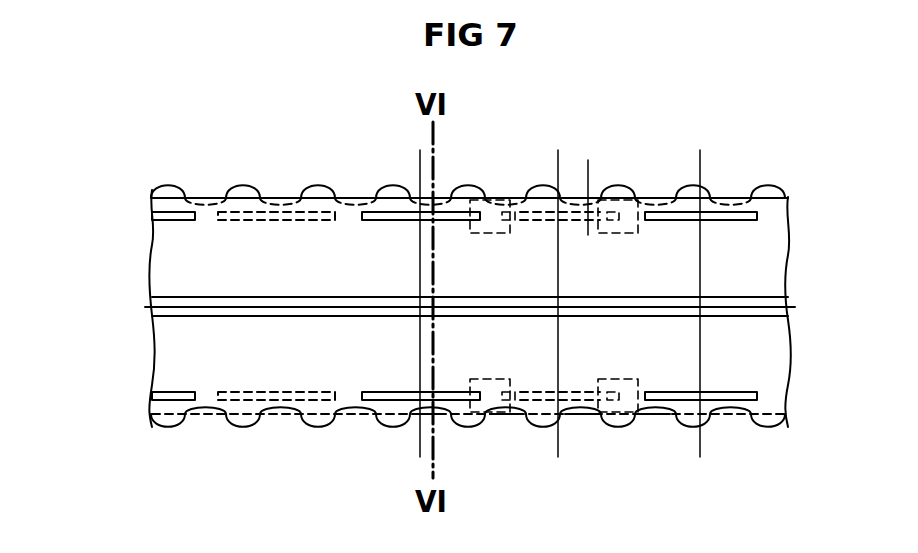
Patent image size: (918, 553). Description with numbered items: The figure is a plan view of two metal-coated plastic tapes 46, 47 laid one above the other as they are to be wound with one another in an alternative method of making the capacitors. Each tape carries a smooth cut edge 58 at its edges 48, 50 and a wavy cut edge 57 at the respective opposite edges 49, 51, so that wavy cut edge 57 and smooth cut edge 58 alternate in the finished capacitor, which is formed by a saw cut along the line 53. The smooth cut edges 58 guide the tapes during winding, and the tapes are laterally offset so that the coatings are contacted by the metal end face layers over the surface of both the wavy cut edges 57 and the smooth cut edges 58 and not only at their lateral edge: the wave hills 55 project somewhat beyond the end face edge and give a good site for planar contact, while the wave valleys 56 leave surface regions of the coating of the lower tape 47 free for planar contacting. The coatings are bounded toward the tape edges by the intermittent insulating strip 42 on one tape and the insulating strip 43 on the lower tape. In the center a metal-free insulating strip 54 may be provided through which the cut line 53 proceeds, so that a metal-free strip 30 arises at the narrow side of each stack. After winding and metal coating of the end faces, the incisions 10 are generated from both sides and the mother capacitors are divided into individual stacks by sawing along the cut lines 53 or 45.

The incisions 10 is at (487, 232).
The metal-free strip 30 is at (490, 297).
The intermittent insulating strip 42 is at (405, 222).
The insulating strip 43 is at (594, 238).
The cut line 45 is at (420, 266).
The plastic tape 46 is at (588, 160).
The plastic tape 47 is at (672, 197).
The edge 48 is at (516, 197).
The edge 49 is at (553, 430).
The edge 50 is at (506, 428).
The edge 51 is at (474, 188).
The cut line 53 is at (762, 297).
The metal-free insulating strip 54 is at (306, 311).
The wave hills 55 is at (548, 428).
The wave valleys 56 is at (512, 219).
The wavy cut edge 57 is at (617, 190).
The smooth cut edge 58 is at (558, 197).